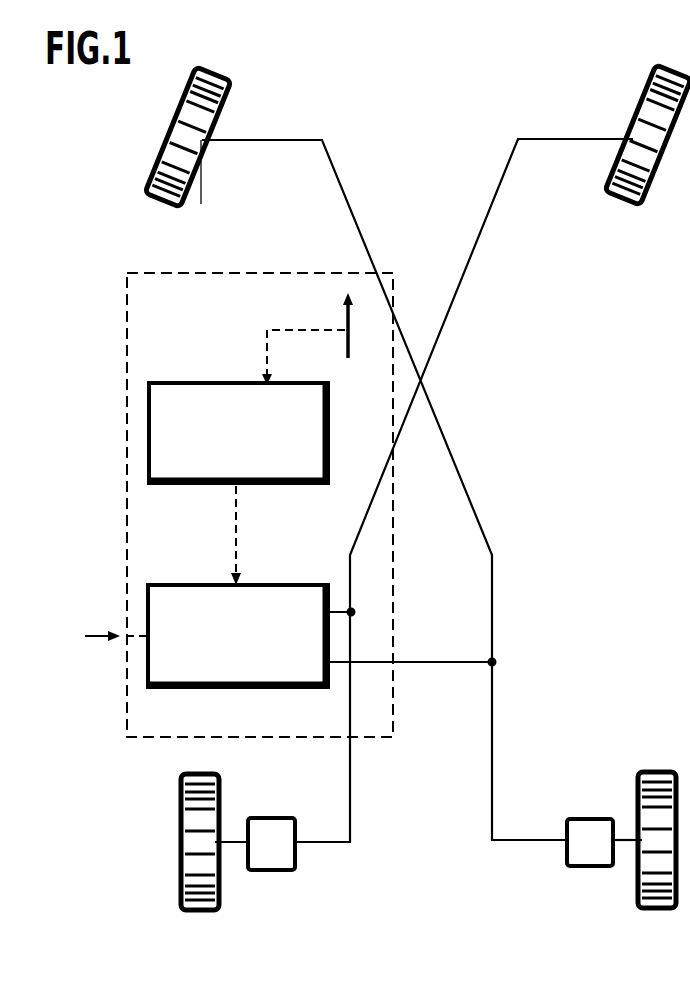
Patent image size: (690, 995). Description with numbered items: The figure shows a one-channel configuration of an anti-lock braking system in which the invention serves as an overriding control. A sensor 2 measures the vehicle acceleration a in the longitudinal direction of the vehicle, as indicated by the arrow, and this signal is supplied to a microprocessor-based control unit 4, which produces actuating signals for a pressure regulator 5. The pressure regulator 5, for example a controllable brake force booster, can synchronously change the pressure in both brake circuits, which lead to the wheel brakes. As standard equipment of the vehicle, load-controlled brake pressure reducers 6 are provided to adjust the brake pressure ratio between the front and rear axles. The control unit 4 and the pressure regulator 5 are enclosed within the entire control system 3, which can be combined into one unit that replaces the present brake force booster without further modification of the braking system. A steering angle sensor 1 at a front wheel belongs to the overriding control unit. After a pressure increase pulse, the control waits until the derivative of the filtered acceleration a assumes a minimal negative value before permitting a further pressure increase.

The steering angle sensor 1 is at (196, 193).
The sensor 2 is at (356, 325).
The control system 3 is at (378, 460).
The control unit 4 is at (318, 383).
The pressure regulator 5 is at (296, 585).
The load-controlled brake pressure reducer 6 is at (279, 830).
The vehicle acceleration a is at (303, 345).